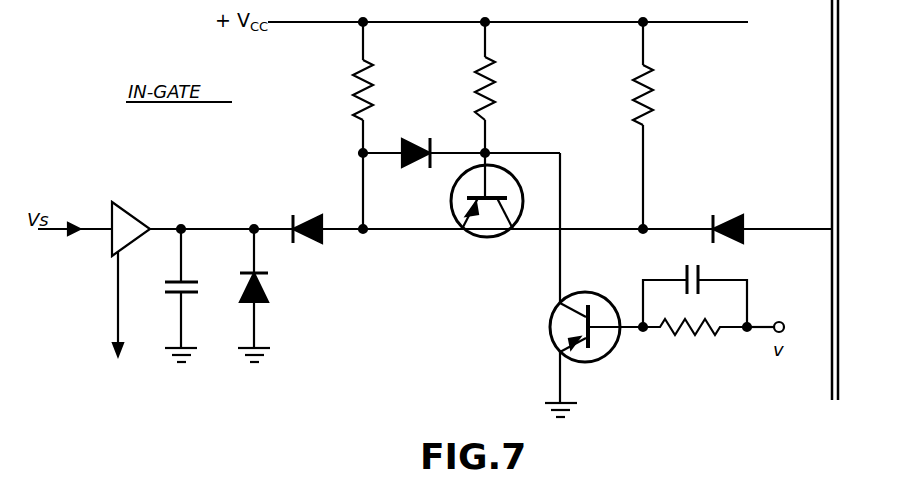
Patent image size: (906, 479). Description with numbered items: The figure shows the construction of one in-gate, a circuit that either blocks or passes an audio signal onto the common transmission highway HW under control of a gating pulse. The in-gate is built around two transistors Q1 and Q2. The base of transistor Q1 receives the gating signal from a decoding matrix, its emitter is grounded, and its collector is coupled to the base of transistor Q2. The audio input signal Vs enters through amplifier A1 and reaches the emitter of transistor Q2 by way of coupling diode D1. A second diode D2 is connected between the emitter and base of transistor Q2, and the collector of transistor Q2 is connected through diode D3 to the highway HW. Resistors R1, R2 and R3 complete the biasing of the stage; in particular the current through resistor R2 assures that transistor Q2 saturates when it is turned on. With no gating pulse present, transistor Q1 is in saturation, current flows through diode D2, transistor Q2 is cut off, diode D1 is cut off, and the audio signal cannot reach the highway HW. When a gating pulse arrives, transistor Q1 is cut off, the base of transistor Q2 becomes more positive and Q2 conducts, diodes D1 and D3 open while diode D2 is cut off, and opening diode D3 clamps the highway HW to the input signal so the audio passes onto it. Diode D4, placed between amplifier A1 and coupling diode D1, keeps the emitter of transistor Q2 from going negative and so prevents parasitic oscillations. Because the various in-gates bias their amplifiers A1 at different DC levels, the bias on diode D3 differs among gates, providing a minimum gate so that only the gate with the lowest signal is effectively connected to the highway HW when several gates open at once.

The amplifier A1 is at (123, 290).
The resistor R1 is at (345, 125).
The resistor R2 is at (467, 87).
The resistor R3 is at (626, 125).
The diode D1 is at (308, 216).
The second diode D2 is at (459, 142).
The diode D3 is at (729, 214).
The diode D4 is at (268, 295).
The transistor Q1 is at (580, 285).
The transistor Q2 is at (487, 207).
The common transmission highway HW is at (840, 132).